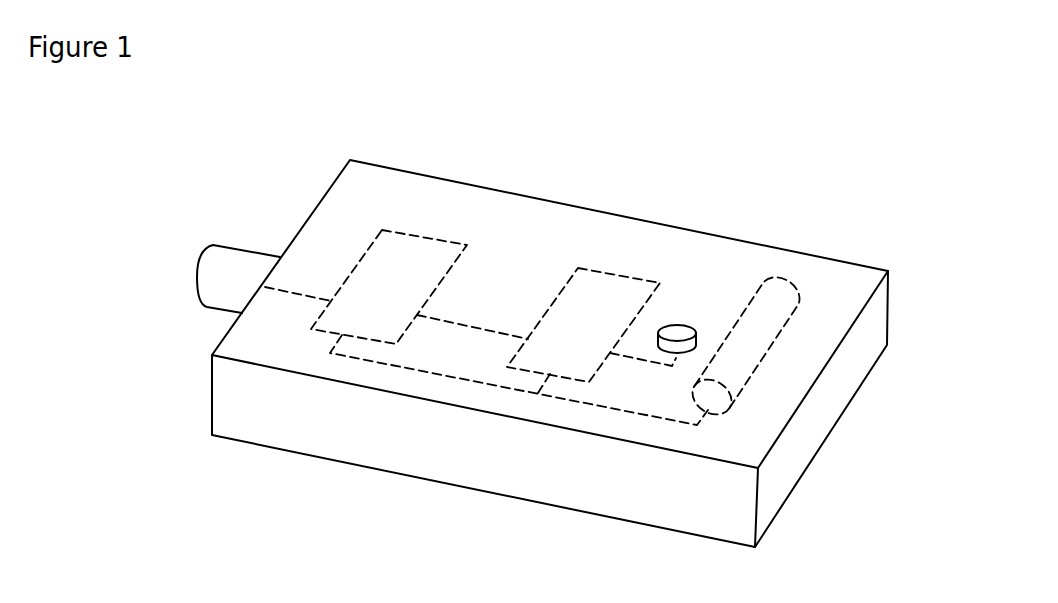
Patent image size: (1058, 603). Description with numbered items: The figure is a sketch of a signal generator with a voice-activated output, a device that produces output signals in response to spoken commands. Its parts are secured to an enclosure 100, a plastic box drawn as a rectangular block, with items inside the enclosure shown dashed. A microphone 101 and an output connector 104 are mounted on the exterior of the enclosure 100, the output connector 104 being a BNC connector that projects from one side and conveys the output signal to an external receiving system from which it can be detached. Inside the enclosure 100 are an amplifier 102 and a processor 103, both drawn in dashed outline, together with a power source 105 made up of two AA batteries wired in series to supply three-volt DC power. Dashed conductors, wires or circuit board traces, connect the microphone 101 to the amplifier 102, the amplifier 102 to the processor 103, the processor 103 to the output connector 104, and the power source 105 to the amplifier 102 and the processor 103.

The enclosure 100 is at (321, 200).
The microphone 101 is at (678, 325).
The amplifier 102 is at (605, 272).
The processor 103 is at (398, 233).
The output connector 104 is at (225, 245).
The power source 105 is at (785, 282).